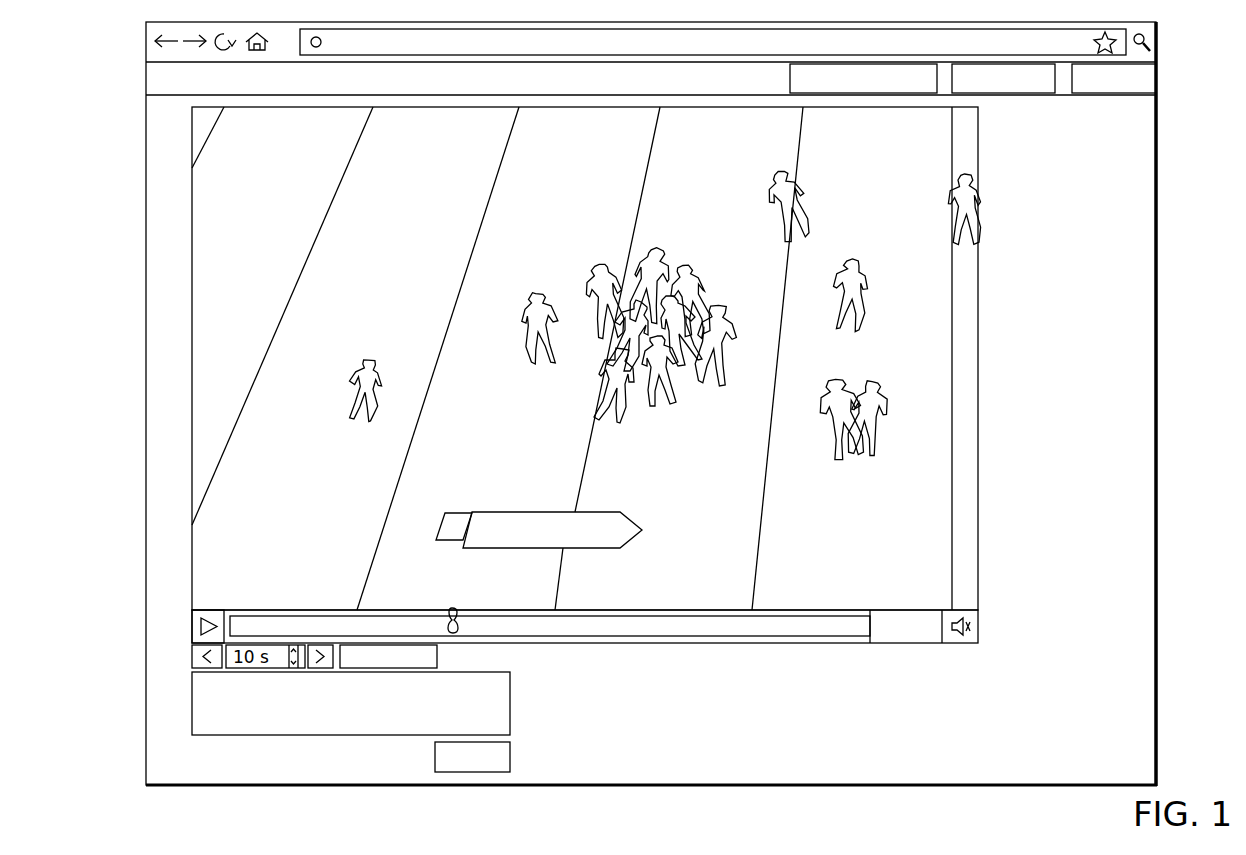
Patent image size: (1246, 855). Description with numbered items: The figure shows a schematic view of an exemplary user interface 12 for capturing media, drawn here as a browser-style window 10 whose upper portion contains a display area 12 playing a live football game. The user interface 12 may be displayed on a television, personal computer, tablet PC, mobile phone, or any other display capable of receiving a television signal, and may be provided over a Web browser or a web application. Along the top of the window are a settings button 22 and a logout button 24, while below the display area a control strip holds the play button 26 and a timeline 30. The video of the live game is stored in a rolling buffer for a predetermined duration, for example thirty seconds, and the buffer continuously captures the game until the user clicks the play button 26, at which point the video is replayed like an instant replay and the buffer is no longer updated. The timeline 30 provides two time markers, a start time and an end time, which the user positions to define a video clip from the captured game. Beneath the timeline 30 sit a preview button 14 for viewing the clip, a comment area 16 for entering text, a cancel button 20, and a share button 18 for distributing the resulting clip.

The user interface / browser window 10 is at (689, 393).
The user interface 12 is at (1072, 272).
The preview button 14 is at (460, 654).
The comment area 16 is at (500, 698).
The share button 18 is at (513, 757).
The cancel button 20 is at (273, 748).
The settings button 22 is at (1020, 64).
The logout button 24 is at (1160, 70).
The play button 26 is at (190, 624).
The timeline 30 is at (548, 666).